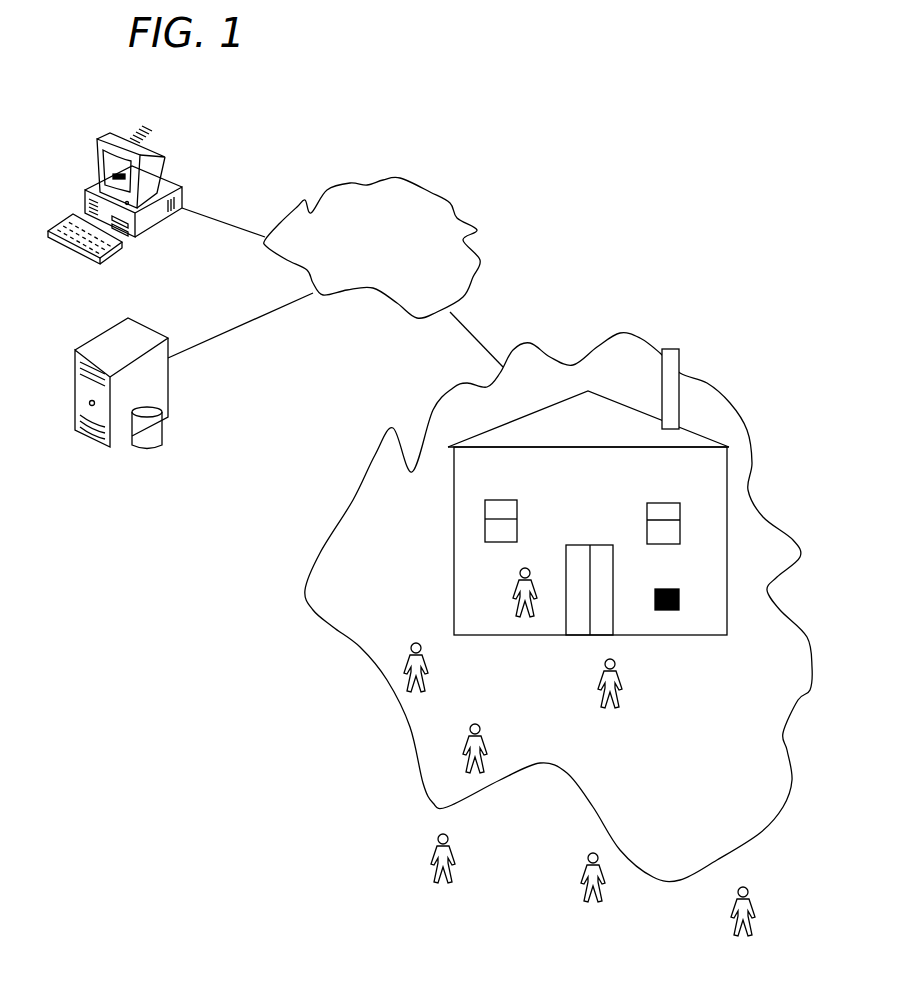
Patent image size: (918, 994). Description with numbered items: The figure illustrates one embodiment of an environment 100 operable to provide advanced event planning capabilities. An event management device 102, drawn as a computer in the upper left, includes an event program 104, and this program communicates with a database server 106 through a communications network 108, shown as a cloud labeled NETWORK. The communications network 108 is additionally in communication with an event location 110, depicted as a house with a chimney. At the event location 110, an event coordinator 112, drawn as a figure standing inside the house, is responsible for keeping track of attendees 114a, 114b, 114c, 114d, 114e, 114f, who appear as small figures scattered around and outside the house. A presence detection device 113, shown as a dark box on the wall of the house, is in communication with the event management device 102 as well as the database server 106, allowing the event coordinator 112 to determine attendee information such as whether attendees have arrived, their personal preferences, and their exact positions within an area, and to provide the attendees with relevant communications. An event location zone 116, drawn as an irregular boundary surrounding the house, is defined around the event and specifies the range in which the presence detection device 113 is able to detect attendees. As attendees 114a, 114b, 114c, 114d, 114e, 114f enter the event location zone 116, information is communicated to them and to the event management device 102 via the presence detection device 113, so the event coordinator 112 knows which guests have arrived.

The environment 100 is at (628, 60).
The event management device 102 is at (165, 172).
The event program 104 is at (118, 175).
The database server 106 is at (128, 318).
The communications network 108 is at (357, 183).
The event location 110 is at (730, 460).
The event coordinator 112 is at (514, 578).
The presence detection device 113 is at (680, 594).
The attendee 114a is at (405, 666).
The attendee 114b is at (622, 680).
The attendee 114c is at (487, 748).
The attendee 114d is at (455, 857).
The attendee 114e is at (582, 877).
The attendee 114f is at (733, 907).
The event location zone 116 is at (633, 335).